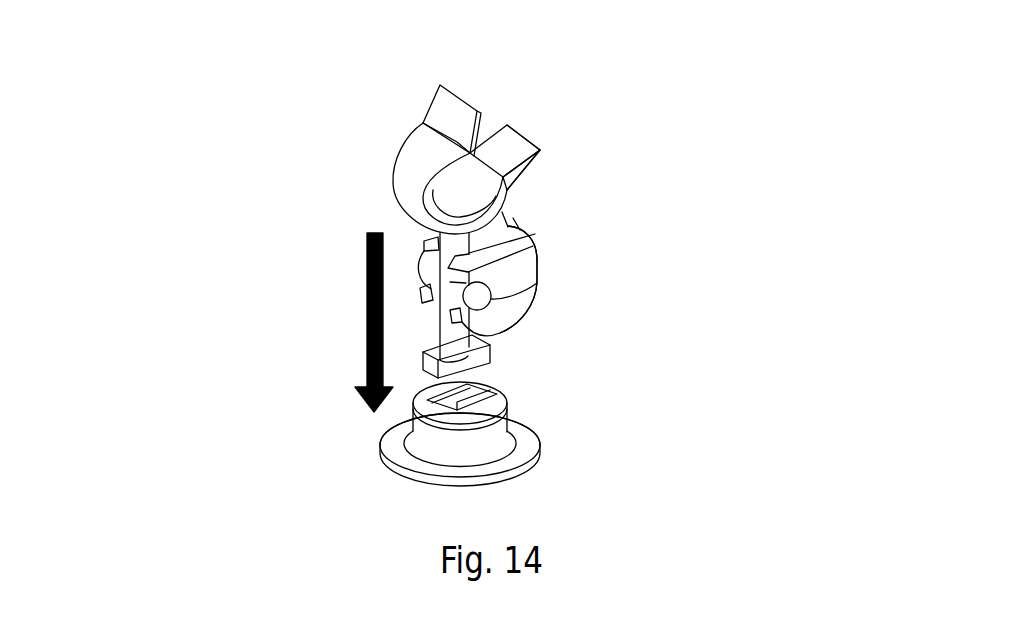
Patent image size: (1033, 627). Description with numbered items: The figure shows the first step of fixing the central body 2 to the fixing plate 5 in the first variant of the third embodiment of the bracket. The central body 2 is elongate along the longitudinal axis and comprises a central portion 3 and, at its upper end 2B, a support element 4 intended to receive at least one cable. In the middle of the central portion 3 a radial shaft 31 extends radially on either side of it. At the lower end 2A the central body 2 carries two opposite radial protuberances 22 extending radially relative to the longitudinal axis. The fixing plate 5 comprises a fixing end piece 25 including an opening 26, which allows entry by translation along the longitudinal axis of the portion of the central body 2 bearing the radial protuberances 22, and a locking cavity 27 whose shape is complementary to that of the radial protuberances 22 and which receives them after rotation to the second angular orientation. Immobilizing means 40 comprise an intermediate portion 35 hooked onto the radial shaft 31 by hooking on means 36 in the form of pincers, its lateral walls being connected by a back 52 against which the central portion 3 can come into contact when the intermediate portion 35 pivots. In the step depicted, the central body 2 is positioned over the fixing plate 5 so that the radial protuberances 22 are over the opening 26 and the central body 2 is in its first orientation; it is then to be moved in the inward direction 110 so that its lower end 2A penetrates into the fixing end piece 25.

The central body 2 is at (428, 339).
The lower end 2A is at (415, 392).
The upper end 2B is at (392, 139).
The central portion 3 is at (420, 302).
The support element 4 is at (514, 145).
The fixing plate 5 is at (520, 457).
The radial protuberances 22 is at (492, 362).
The fixing end piece 25 is at (508, 422).
The opening 26 is at (500, 389).
The locking cavity 27 is at (440, 425).
The radial shaft 31 is at (487, 293).
The intermediate portion 35 is at (540, 238).
The hooking on means 36 is at (540, 252).
The immobilizing means 40 is at (558, 269).
The back 52 is at (506, 213).
The inward direction 110 is at (366, 255).